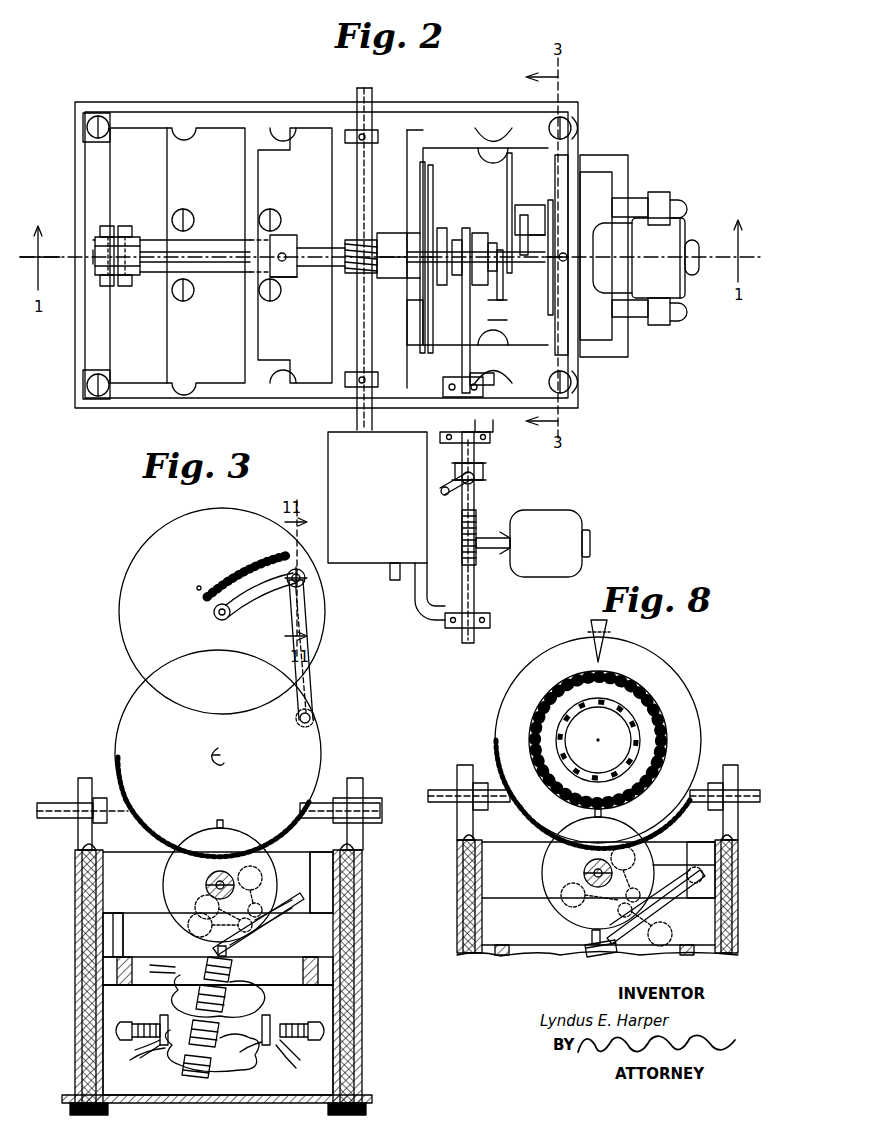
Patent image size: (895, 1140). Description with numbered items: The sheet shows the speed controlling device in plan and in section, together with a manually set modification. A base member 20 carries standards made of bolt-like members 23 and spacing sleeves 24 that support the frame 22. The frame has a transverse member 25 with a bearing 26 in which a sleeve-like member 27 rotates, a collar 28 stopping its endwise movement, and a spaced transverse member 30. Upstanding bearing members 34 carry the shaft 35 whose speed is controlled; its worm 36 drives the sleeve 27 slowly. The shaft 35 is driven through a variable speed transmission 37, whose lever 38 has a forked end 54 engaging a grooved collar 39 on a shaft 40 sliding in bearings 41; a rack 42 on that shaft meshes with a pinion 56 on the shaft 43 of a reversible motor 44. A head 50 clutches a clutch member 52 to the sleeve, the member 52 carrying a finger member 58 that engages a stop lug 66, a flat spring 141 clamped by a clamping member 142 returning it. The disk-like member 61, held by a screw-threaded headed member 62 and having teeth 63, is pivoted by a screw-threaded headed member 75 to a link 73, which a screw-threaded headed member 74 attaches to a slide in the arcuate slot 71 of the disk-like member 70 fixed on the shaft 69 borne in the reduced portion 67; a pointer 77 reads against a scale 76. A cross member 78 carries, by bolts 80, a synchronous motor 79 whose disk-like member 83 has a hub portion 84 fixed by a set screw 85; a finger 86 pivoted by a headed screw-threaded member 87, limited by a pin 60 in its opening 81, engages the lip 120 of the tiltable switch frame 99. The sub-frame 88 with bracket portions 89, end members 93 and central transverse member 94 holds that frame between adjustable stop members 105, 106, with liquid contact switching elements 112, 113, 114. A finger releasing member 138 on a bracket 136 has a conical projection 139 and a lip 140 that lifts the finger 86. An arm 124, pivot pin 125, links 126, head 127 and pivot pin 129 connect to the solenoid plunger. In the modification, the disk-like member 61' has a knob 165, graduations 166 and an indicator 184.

In FIG. 3, the base member 20 is at (88, 1098).
In FIG. 2, the frame 22 is at (255, 118).
In FIG. 3, the frame 22 is at (76, 890).
In FIG. 8, the frame 22 is at (462, 862).
In FIG. 3, the bolt-like members 23 is at (76, 970).
In FIG. 8, the bolt-like members 23 is at (468, 895).
In FIG. 3, the spacing sleeves 24 is at (76, 1010).
In FIG. 8, the spacing sleeves 24 is at (486, 940).
In FIG. 2, the transverse member 25 is at (245, 340).
In FIG. 2, the bearing 26 is at (273, 243).
In FIG. 2, the sleeve-like member 27 is at (318, 240).
In FIG. 2, the collar 28 is at (292, 278).
In FIG. 2, the transverse member 30 is at (408, 313).
In FIG. 2, the upstanding bearing members 34 is at (374, 122).
In FIG. 3, the upstanding bearing members 34 is at (78, 790).
In FIG. 8, the upstanding bearing members 34 is at (462, 775).
In FIG. 2, the shaft 35 is at (345, 315).
In FIG. 3, the shaft 35 is at (130, 818).
In FIG. 8, the shaft 35 is at (512, 804).
In FIG. 2, the worm 36 is at (362, 244).
In FIG. 3, the variable speed transmission 37 is at (372, 558).
In FIG. 3, the lever 38 is at (435, 482).
In FIG. 3, the grooved collar 39 is at (483, 476).
In FIG. 3, the shaft 40 is at (475, 452).
In FIG. 2, the bearings 41 is at (486, 428).
In FIG. 3, the bearings 41 is at (460, 628).
In FIG. 3, the rack 42 is at (462, 524).
In FIG. 3, the shaft 43 is at (500, 535).
In FIG. 3, the motor 44 is at (560, 535).
In FIG. 2, the head 50 is at (480, 245).
In FIG. 2, the clutch member 52 is at (467, 290).
In FIG. 3, the forked end 54 is at (455, 488).
In FIG. 3, the pinion 56 is at (476, 548).
In FIG. 2, the finger member 58 is at (452, 226).
In FIG. 3, the finger member 58 is at (228, 828).
In FIG. 8, the finger member 58 is at (590, 811).
In FIG. 2, the pin 60 is at (540, 233).
In FIG. 3, the pin 60 is at (217, 907).
In FIG. 8, the pin 60 is at (589, 895).
In FIG. 3, the disk-like member 61 is at (245, 797).
In FIG. 8, the disk-like member 61' is at (608, 742).
In FIG. 3, the screw-threaded headed member 62 is at (210, 748).
In FIG. 3, the teeth 63 is at (118, 780).
In FIG. 8, the teeth 63 is at (497, 757).
In FIG. 2, the stop lug 66 is at (448, 277).
In FIG. 2, the reduced portion 67 is at (410, 275).
In FIG. 2, the shaft 69 is at (393, 257).
In FIG. 2, the disk-like member 70 is at (422, 326).
In FIG. 3, the disk-like member 70 is at (152, 582).
In FIG. 3, the arcuate slot 71 is at (255, 600).
In FIG. 3, the link 73 is at (308, 677).
In FIG. 2, the screw-threaded headed member 74 is at (432, 175).
In FIG. 3, the screw-threaded headed member 74 is at (305, 600).
In FIG. 3, the screw-threaded headed member 75 is at (314, 718).
In FIG. 3, the scale 76 is at (233, 562).
In FIG. 3, the pointer 77 is at (300, 568).
In FIG. 2, the cross member 78 is at (575, 150).
In FIG. 2, the motor 79 is at (660, 240).
In FIG. 2, the bolts 80 is at (628, 203).
In FIG. 3, the opening 81 is at (213, 925).
In FIG. 8, the opening 81 is at (652, 929).
In FIG. 2, the disk-like member 83 is at (548, 305).
In FIG. 3, the disk-like member 83 is at (178, 878).
In FIG. 8, the disk-like member 83 is at (635, 838).
In FIG. 2, the hub portion 84 is at (575, 265).
In FIG. 2, the set screw 85 is at (575, 255).
In FIG. 2, the finger 86 is at (545, 215).
In FIG. 3, the finger 86 is at (240, 945).
In FIG. 8, the finger 86 is at (611, 952).
In FIG. 2, the headed screw-threaded member 87 is at (545, 222).
In FIG. 3, the headed screw-threaded member 87 is at (250, 899).
In FIG. 8, the headed screw-threaded member 87 is at (657, 881).
In FIG. 2, the sub-frame 88 is at (600, 160).
In FIG. 3, the sub-frame 88 is at (115, 948).
In FIG. 2, the bracket portions 89 is at (480, 130).
In FIG. 3, the bracket portions 89 is at (80, 940).
In FIG. 2, the end members 93 is at (332, 198).
In FIG. 2, the central transverse member 94 is at (495, 318).
In FIG. 3, the tiltable switch frame 99 is at (210, 956).
In FIG. 8, the tiltable switch frame 99 is at (597, 952).
In FIG. 3, the adjustable stop member 105 is at (145, 1022).
In FIG. 3, the adjustable stop member 106 is at (290, 1022).
In FIG. 3, the liquid contact switching element 112 is at (215, 1063).
In FIG. 3, the liquid contact switching element 113 is at (262, 1062).
In FIG. 3, the liquid contact switching element 114 is at (258, 992).
In FIG. 3, the lip 120 is at (210, 948).
In FIG. 8, the lip 120 is at (588, 935).
In FIG. 2, the arm 124 is at (218, 265).
In FIG. 2, the pivot pin 125 is at (122, 234).
In FIG. 2, the links 126 is at (138, 236).
In FIG. 2, the head 127 is at (95, 260).
In FIG. 2, the pivot pin 129 is at (108, 226).
In FIG. 3, the bracket 136 is at (325, 905).
In FIG. 2, the finger releasing member 138 is at (510, 190).
In FIG. 3, the finger releasing member 138 is at (295, 862).
In FIG. 2, the conical projection 139 is at (503, 285).
In FIG. 3, the lip 140 is at (282, 920).
In FIG. 8, the lip 140 is at (665, 908).
In FIG. 2, the flat spring 141 is at (462, 318).
In FIG. 2, the clamping member 142 is at (460, 400).
In FIG. 8, the knob 165 is at (625, 735).
In FIG. 8, the graduations 166 is at (562, 682).
In FIG. 8, the indicator 184 is at (606, 640).